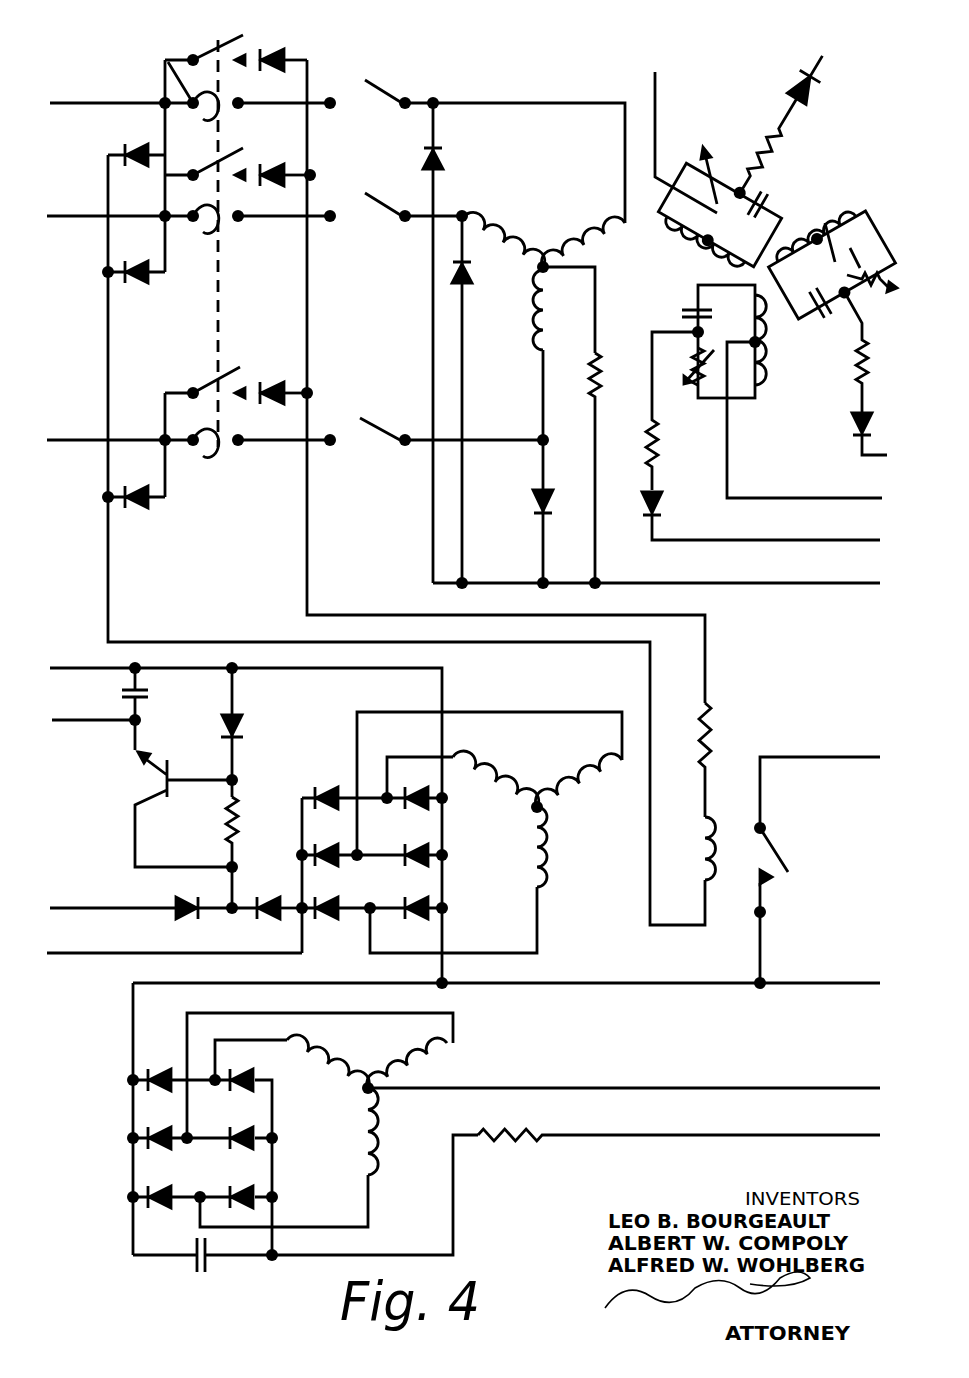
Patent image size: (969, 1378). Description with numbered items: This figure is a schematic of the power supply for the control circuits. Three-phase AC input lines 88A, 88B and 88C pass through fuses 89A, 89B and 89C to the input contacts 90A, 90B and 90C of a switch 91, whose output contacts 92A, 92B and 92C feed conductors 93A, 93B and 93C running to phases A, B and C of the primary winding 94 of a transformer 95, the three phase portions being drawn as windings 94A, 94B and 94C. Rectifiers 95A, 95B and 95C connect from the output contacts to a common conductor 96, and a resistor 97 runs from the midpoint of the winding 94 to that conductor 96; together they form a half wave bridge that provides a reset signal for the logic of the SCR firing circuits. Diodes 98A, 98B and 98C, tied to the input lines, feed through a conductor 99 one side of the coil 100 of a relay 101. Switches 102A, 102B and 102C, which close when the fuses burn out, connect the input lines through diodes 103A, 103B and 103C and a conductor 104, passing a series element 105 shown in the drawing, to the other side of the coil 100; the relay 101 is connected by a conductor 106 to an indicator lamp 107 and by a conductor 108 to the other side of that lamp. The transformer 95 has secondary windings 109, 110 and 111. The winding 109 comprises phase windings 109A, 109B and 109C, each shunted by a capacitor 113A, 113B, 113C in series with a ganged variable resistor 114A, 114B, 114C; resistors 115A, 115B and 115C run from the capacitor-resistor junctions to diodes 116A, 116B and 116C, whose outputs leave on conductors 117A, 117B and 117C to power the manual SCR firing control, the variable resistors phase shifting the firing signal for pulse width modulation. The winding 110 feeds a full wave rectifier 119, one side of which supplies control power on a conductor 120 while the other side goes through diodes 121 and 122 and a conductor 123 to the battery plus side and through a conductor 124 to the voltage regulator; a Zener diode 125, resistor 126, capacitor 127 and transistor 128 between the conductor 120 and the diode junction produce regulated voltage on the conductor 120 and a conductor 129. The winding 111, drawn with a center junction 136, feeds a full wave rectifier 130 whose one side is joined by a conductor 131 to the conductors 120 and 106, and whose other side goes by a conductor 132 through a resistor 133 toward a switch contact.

The AC input line 88A is at (100, 103).
The AC input line 88B is at (89, 215).
The AC input line 88C is at (88, 440).
The fuse 89A is at (168, 64).
The fuse 89B is at (210, 233).
The fuse 89C is at (200, 458).
The input contact 90A is at (366, 101).
The input contact 90B is at (366, 214).
The input contact 90C is at (378, 445).
The switch 91 is at (418, 338).
The output contact 92A is at (369, 80).
The output contact 92B is at (376, 208).
The output contact 92C is at (372, 415).
The conductor 93A is at (458, 103).
The conductor 93B is at (404, 221).
The conductor 93C is at (467, 440).
The primary winding 94 is at (544, 297).
The winding phase A 94A is at (575, 220).
The winding phase B 94B is at (490, 205).
The winding phase C 94C is at (510, 355).
The transformer 95 is at (763, 314).
The rectifier 95A is at (446, 158).
The rectifier 95B is at (473, 268).
The rectifier 95C is at (544, 492).
The conductor 96 is at (856, 602).
The resistor 97 is at (598, 387).
The diode 98A is at (142, 150).
The diode 98B is at (146, 275).
The diode 98C is at (140, 505).
The conductor 99 is at (525, 645).
The coil 100 is at (715, 846).
The relay 101 is at (760, 863).
The switch 102A is at (222, 46).
The switch 102B is at (210, 167).
The switch 102C is at (215, 380).
The diode 103A is at (282, 57).
The diode 103B is at (283, 175).
The diode 103C is at (290, 340).
The conductor 104 is at (705, 638).
The resistor 105 is at (714, 716).
The conductor 106 is at (802, 983).
The indicator lamp 107 is at (785, 1090).
The conductor 108 is at (820, 757).
The secondary winding 109 is at (804, 396).
The phase winding 109A is at (706, 245).
The phase winding 109B is at (807, 232).
The phase winding 109C is at (760, 388).
The secondary winding 110 is at (515, 845).
The secondary winding 111 is at (342, 1145).
The capacitor 113A is at (702, 192).
The capacitor 113B is at (840, 245).
The capacitor 113C is at (722, 310).
The ganged variable resistor 114A is at (737, 130).
The ganged variable resistor 114B is at (827, 227).
The ganged variable resistor 114C is at (691, 387).
The resistor 115A is at (768, 146).
The resistor 115B is at (862, 372).
The resistor 115C is at (654, 449).
The diode 116A is at (803, 88).
The diode 116B is at (861, 438).
The diode 116C is at (660, 510).
The conductor 117A is at (835, 76).
The conductor 117B is at (882, 470).
The conductor 117C is at (878, 548).
The full wave rectifier 119 is at (410, 845).
The conductor 120 is at (267, 668).
The diode 121 is at (284, 906).
The diode 122 is at (185, 914).
The conductor 123 is at (108, 908).
The conductor 124 is at (108, 953).
The Zener diode 125 is at (245, 732).
The resistor 126 is at (225, 829).
The capacitor 127 is at (150, 695).
The transistor 128 is at (160, 780).
The conductor 129 is at (88, 722).
The full wave rectifier 130 is at (224, 1188).
The conductor 131 is at (130, 1035).
The conductor 132 is at (380, 1255).
The resistor 133 is at (535, 1135).
The neutral junction 136 is at (372, 1092).